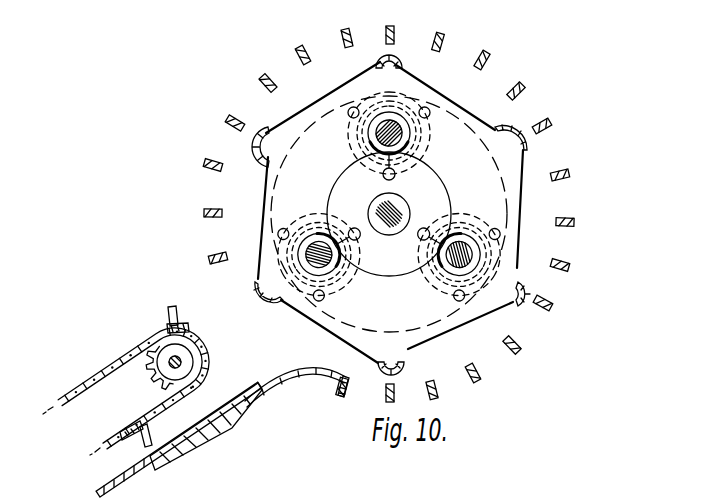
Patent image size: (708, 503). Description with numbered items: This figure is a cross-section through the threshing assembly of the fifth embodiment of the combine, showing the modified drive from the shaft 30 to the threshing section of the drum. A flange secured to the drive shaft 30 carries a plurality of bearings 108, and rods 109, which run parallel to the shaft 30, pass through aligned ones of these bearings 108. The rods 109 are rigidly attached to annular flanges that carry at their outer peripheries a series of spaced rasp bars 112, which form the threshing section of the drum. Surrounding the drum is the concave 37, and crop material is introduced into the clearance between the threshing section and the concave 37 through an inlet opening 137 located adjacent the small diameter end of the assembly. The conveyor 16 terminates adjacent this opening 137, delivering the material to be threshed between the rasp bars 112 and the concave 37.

The conveyor 16 is at (192, 387).
The drive shaft 30 is at (390, 237).
The concave 37 is at (546, 304).
The bearings 108 is at (404, 143).
The rods 109 is at (401, 132).
The rasp bars 112 is at (522, 296).
The inlet opening 137 is at (302, 343).